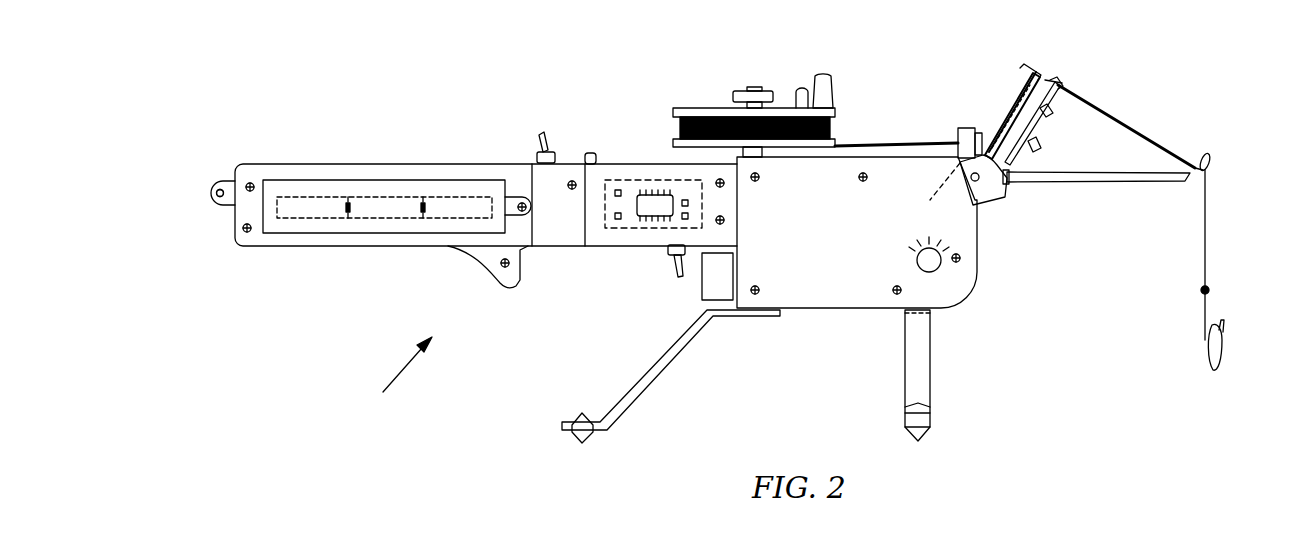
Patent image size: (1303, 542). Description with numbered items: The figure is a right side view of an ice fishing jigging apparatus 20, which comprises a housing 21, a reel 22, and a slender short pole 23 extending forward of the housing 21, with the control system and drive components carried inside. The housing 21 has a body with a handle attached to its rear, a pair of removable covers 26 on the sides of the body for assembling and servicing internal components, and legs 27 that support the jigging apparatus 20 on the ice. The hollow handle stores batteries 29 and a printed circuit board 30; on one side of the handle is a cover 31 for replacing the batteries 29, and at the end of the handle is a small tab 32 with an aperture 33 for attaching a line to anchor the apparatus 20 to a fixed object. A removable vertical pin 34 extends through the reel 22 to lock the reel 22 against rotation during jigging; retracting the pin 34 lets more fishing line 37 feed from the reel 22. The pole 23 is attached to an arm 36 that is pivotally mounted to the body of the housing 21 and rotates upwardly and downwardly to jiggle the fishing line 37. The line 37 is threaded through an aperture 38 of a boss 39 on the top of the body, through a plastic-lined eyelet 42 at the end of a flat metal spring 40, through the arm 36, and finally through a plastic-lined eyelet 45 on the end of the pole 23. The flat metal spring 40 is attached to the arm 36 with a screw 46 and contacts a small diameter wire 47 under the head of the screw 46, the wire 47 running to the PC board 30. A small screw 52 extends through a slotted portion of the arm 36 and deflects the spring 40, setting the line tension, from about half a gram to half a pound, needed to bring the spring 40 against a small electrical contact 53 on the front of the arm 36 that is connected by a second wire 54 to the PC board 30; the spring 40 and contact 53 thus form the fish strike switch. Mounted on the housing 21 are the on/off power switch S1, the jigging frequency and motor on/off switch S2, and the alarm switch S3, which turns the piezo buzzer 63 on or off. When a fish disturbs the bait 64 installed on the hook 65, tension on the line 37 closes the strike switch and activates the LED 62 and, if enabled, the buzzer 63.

The ice fishing jigging apparatus 20 is at (392, 374).
The housing 21 is at (812, 310).
The reel 22 is at (717, 108).
The slender short pole 23 is at (1130, 183).
The removable covers 26 is at (857, 232).
The legs 27 is at (677, 357).
The batteries 29 is at (390, 218).
The printed circuit board 30 is at (648, 178).
The cover 31 is at (393, 180).
The tab 32 is at (217, 178).
The aperture 33 is at (214, 206).
The removable vertical pin 34 is at (797, 90).
The arm 36 is at (1060, 83).
The fishing line 37 is at (1125, 126).
The aperture 38 is at (932, 187).
The boss 39 is at (966, 128).
The flat metal spring 40 is at (1010, 115).
The eyelet 42 is at (1030, 67).
The eyelet 45 is at (1210, 155).
The screw 46 is at (990, 150).
The wire 47 is at (1007, 183).
The screw 52 is at (1032, 150).
The electrical contact 53 is at (1045, 78).
The second wire 54 is at (1047, 113).
The light (LED) 62 is at (590, 153).
The piezo buzzer 63 is at (720, 300).
The bait 64 is at (1212, 368).
The hook 65 is at (1223, 342).
The power switch S1 is at (538, 137).
The jigging frequency and motor switch S2 is at (936, 271).
The alarm switch S3 is at (677, 268).